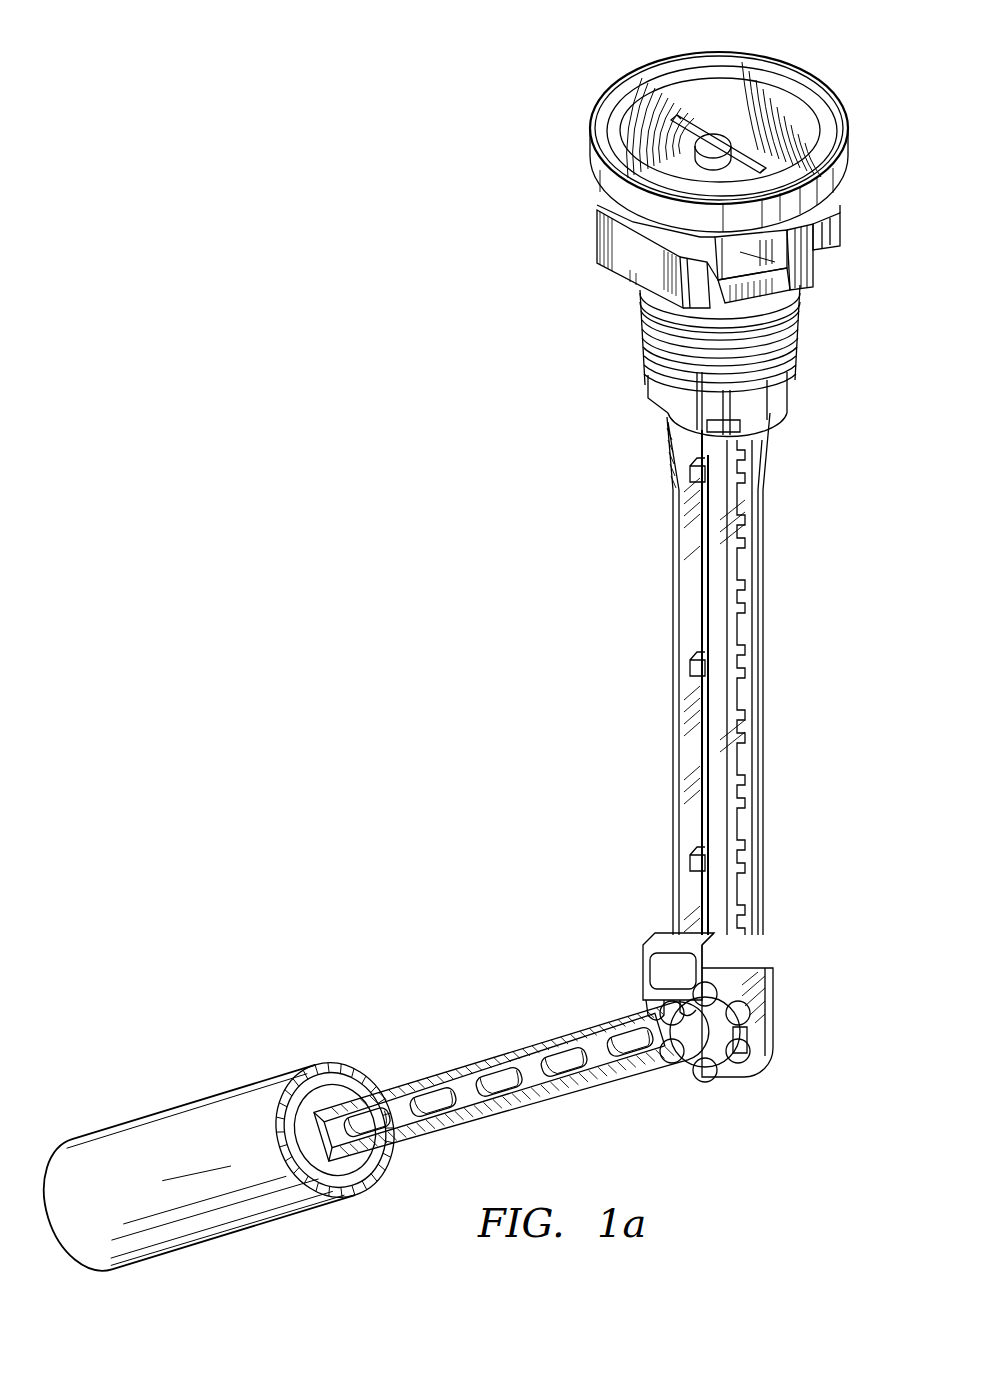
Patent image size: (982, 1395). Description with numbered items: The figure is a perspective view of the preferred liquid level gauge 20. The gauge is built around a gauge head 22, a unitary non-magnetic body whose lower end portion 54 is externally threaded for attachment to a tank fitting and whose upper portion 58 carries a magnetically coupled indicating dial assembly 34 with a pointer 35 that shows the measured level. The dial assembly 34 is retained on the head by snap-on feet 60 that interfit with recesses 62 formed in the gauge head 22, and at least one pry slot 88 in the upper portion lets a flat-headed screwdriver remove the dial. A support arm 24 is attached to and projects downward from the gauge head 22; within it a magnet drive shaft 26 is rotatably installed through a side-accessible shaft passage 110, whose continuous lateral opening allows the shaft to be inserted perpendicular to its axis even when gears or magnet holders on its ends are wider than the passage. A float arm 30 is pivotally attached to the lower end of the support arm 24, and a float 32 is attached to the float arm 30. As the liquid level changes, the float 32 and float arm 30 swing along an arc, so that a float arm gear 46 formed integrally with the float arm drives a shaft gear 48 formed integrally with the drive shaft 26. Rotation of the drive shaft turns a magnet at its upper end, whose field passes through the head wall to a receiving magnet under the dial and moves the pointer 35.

The liquid level gauge 20 is at (489, 104).
The gauge head 22 is at (560, 306).
The support arm 24 is at (673, 532).
The magnet drive shaft 26 is at (703, 630).
The float arm 30 is at (500, 1048).
The float 32 is at (192, 1104).
The indicating dial assembly 34 is at (805, 82).
The pointer 35 is at (693, 127).
The float arm gear 46 is at (742, 1062).
The shaft gear 48 is at (672, 922).
The lower end portion 54 is at (640, 340).
The upper portion 58 is at (598, 246).
The snap-on feet 60 is at (814, 268).
The recesses 62 is at (753, 290).
The pry slot 88 is at (586, 192).
The side-accessible shaft passage 110 is at (692, 812).